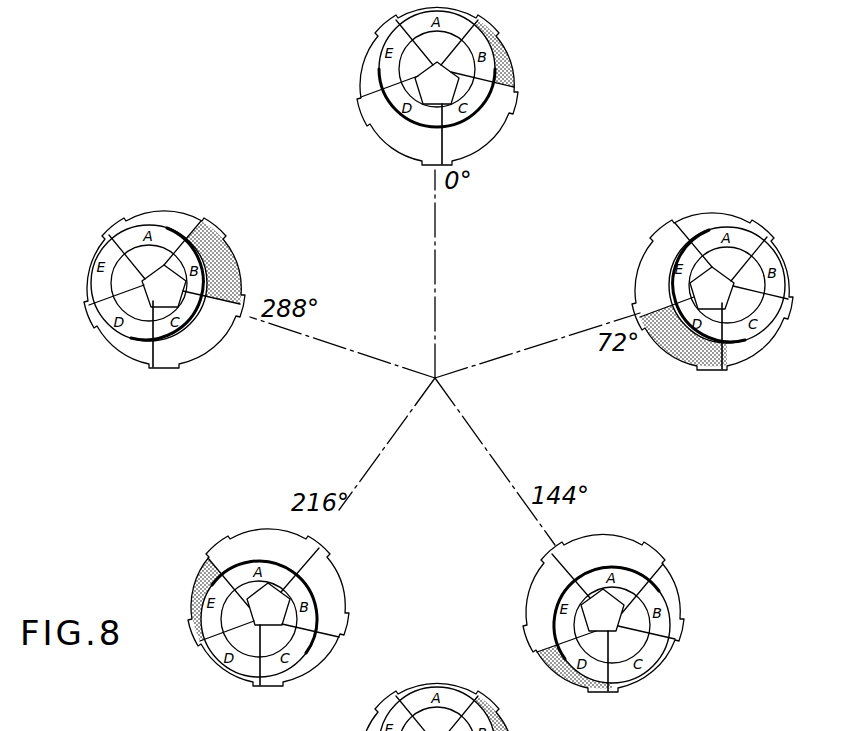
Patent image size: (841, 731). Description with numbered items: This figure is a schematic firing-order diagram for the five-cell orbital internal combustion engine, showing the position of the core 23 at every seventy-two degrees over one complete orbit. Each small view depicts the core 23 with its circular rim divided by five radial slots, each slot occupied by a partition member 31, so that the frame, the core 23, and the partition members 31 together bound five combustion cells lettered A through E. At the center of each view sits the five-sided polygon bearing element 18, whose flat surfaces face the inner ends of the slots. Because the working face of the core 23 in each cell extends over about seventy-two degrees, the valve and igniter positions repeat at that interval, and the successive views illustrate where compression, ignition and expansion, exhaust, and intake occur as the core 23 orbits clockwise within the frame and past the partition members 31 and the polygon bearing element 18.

The core member 23 is at (387, 77).
The polygon bearing element 18 is at (508, 89).
The partition member 31 is at (441, 142).